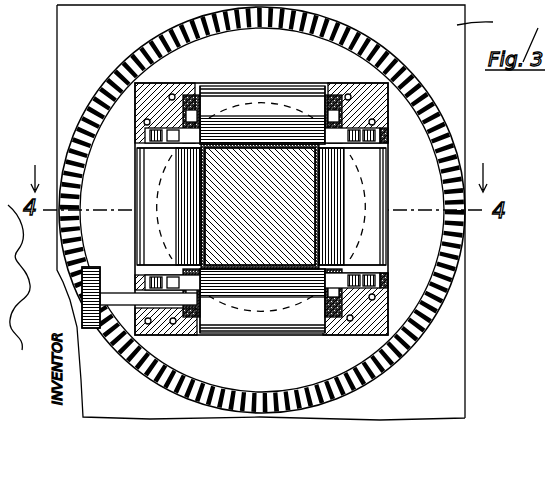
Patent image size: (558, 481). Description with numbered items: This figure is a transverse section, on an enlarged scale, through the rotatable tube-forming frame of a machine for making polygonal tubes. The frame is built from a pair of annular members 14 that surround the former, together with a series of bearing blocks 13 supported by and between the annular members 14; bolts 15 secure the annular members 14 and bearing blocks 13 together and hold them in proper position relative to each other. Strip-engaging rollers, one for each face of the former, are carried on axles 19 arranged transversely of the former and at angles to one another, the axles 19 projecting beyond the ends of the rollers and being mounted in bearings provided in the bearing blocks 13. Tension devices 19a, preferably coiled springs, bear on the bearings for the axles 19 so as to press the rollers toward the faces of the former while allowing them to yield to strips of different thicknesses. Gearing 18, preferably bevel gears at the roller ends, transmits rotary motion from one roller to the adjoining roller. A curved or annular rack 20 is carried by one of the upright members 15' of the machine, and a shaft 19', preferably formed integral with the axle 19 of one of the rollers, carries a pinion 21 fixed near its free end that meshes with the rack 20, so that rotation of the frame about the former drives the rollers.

The bearing blocks 13 is at (162, 83).
The annular members 14 is at (300, 88).
The bolts 15 is at (284, 184).
The upright member 15' is at (493, 23).
The gearing 18 is at (203, 100).
The axles 19 is at (265, 206).
The shaft 19' is at (105, 330).
The tension devices 19a is at (380, 137).
The curved or annular rack 20 is at (72, 138).
The pinion 21 is at (107, 272).